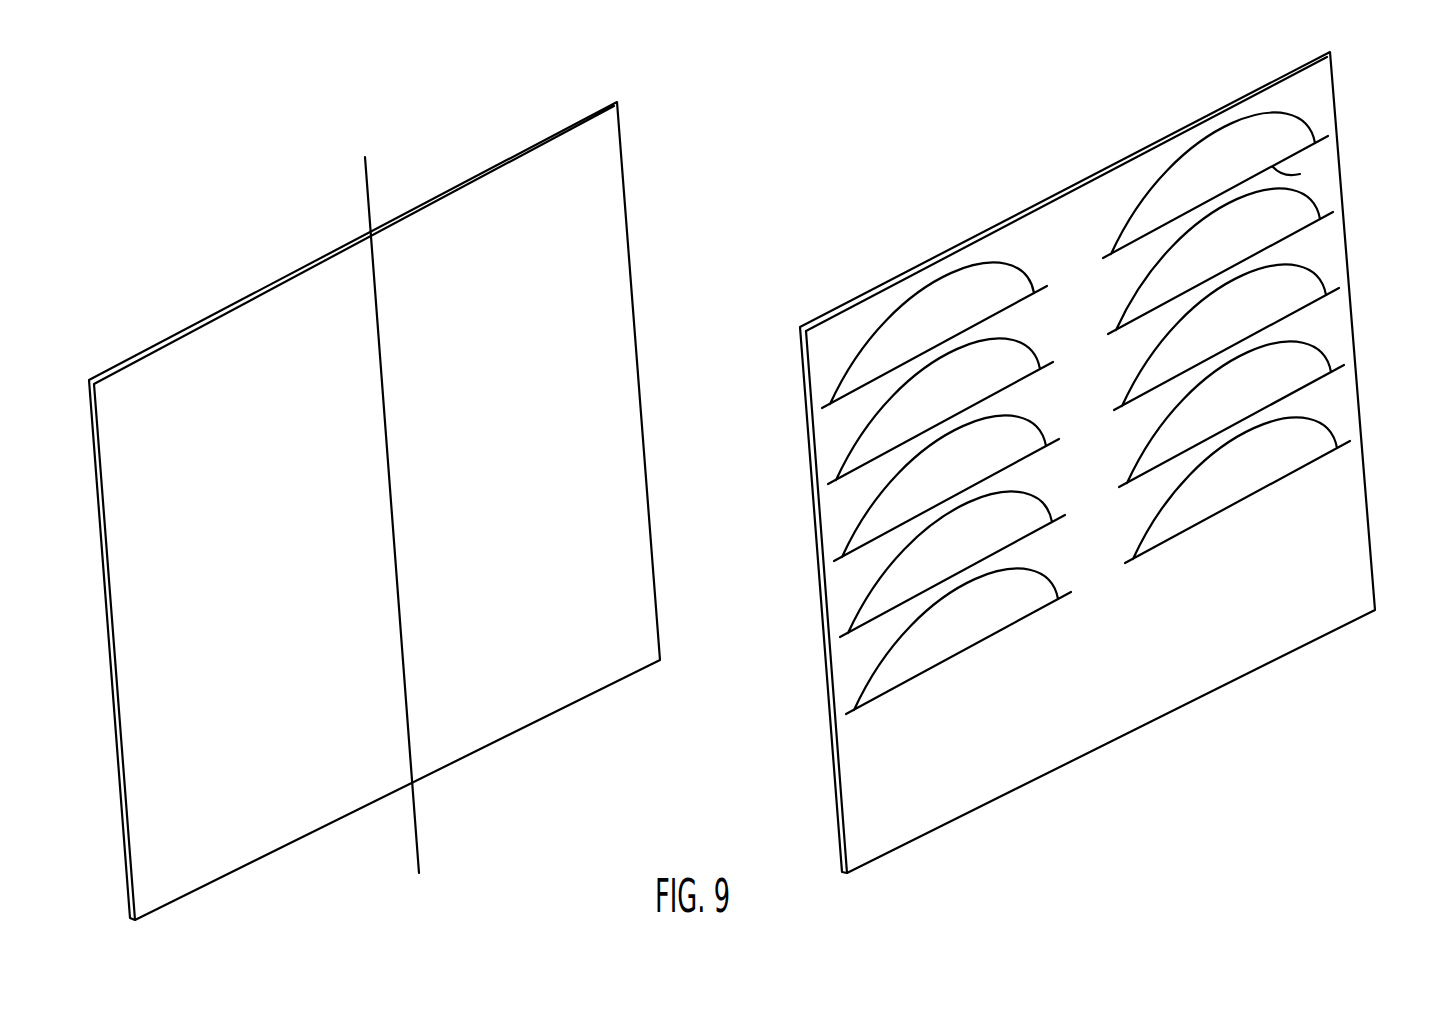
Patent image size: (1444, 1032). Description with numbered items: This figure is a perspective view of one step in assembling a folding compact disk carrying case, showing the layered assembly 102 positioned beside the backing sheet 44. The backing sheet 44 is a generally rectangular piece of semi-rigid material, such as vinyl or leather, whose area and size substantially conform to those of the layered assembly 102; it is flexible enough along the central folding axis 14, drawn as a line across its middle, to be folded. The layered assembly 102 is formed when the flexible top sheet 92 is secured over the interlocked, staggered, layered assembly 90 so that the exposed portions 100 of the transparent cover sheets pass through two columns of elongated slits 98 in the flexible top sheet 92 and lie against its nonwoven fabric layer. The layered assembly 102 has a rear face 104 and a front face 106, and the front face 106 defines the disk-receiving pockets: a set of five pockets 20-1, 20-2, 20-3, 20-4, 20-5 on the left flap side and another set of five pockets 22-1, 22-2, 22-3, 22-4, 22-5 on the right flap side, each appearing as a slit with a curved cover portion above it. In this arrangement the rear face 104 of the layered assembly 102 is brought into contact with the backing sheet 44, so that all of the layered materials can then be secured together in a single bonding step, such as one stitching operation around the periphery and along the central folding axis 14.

The central folding axis 14 is at (369, 175).
The backing sheet 44 is at (262, 288).
The interlocked, staggered, layered assembly 90 is at (883, 281).
The flexible top sheet 92 is at (1316, 105).
The elongated slits 98 is at (997, 316).
The portions of transparent cover sheets 100 is at (1219, 153).
The layered assembly 102 is at (1149, 141).
The rear face 104 is at (798, 382).
The front face 106 is at (1327, 500).
The pocket 20-1 is at (864, 368).
The pocket 20-2 is at (870, 444).
The pocket 20-3 is at (876, 521).
The pocket 20-4 is at (882, 597).
The pocket 20-5 is at (888, 674).
The pocket 22-1 is at (1320, 131).
The pocket 22-2 is at (1323, 219).
The pocket 22-3 is at (1330, 292).
The pocket 22-4 is at (1336, 366).
The pocket 22-5 is at (1340, 441).